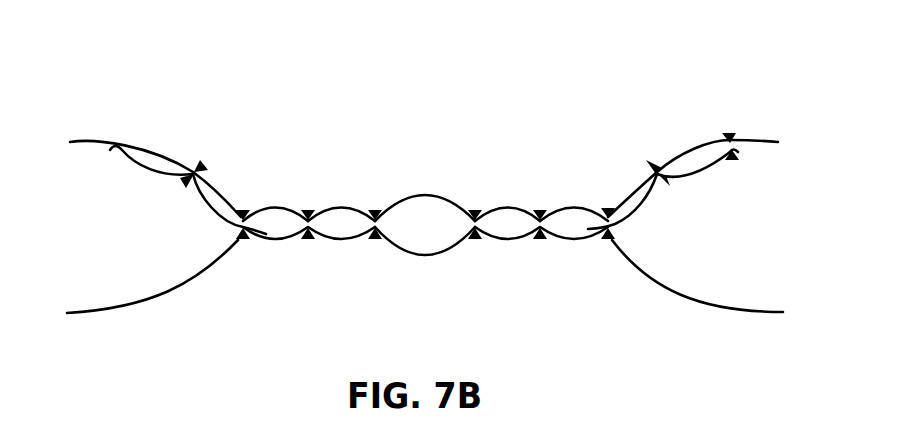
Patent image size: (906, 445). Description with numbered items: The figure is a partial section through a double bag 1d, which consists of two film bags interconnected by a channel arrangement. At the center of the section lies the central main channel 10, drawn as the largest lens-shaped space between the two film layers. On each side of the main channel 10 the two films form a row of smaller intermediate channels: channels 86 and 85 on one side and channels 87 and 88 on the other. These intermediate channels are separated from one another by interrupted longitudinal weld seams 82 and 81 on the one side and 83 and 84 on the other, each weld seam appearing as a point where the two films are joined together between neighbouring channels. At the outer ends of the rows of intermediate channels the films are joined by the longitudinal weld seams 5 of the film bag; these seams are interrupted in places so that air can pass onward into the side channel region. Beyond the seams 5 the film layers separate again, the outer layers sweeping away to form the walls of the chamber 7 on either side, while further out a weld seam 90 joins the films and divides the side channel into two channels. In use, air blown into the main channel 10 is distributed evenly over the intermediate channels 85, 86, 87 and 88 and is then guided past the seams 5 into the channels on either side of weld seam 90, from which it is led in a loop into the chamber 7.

The double bag 1d is at (132, 110).
The longitudinal weld seams 5 is at (425, 185).
The chamber 7 is at (425, 264).
The central main channel 10 is at (425, 187).
The interrupted longitudinal weld seam 81 is at (370, 183).
The interrupted longitudinal weld seam 82 is at (305, 183).
The interrupted longitudinal weld seam 83 is at (479, 185).
The interrupted longitudinal weld seam 84 is at (540, 185).
The intermediate channel 85 is at (341, 261).
The intermediate channel 86 is at (275, 262).
The intermediate channel 87 is at (507, 261).
The intermediate channel 88 is at (574, 261).
The weld seam 90 is at (459, 141).